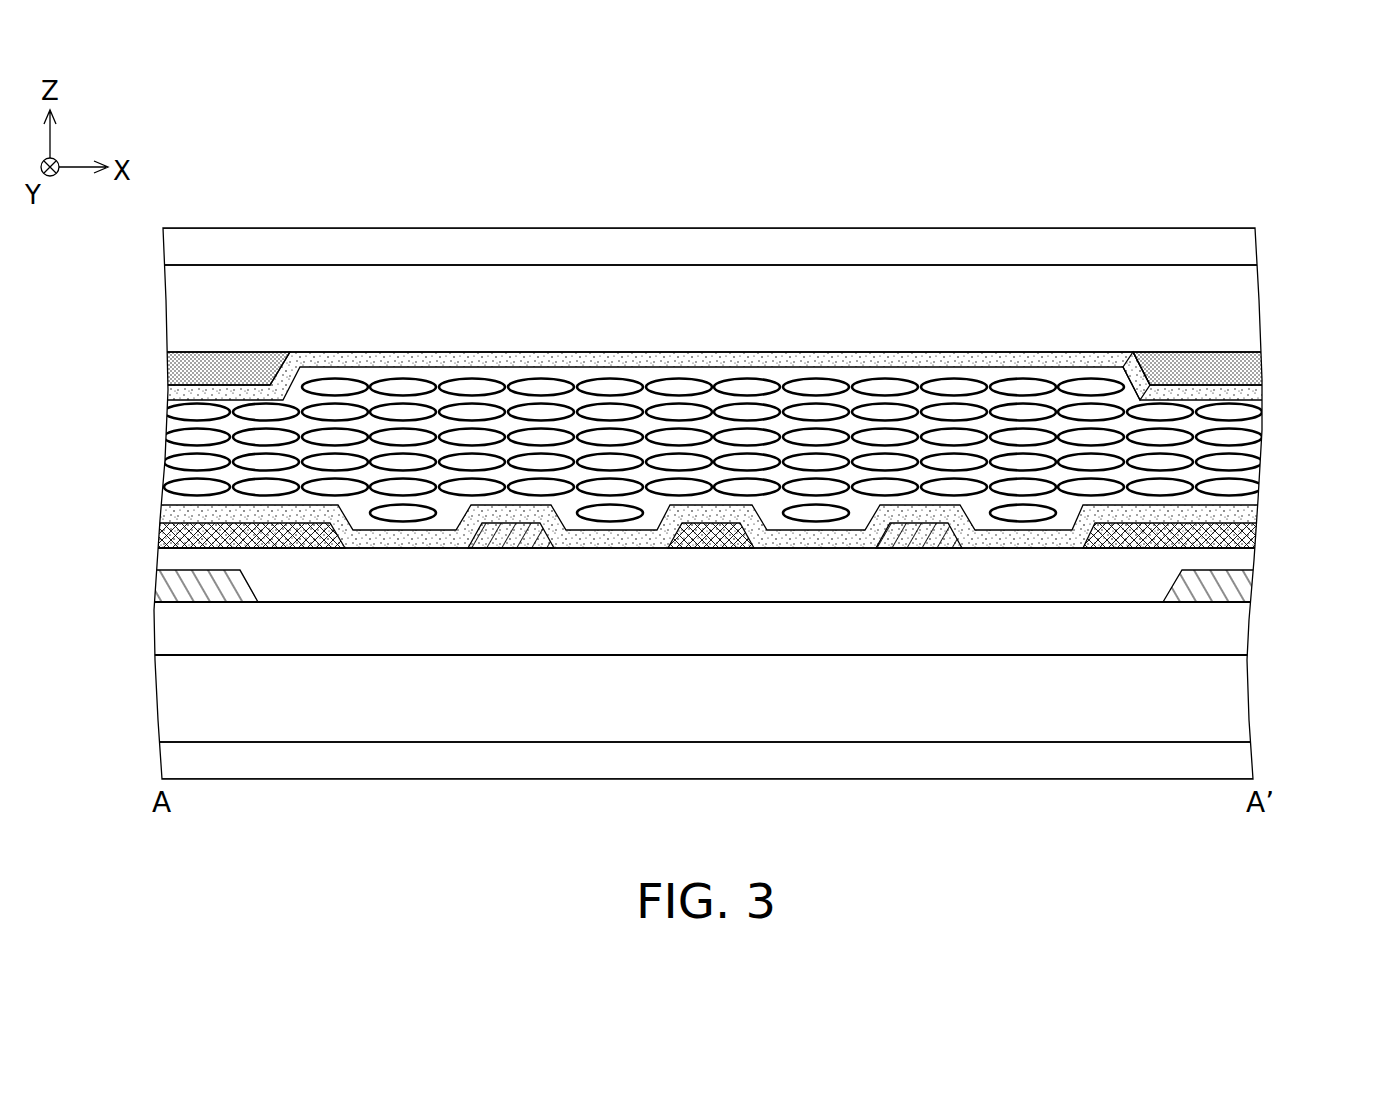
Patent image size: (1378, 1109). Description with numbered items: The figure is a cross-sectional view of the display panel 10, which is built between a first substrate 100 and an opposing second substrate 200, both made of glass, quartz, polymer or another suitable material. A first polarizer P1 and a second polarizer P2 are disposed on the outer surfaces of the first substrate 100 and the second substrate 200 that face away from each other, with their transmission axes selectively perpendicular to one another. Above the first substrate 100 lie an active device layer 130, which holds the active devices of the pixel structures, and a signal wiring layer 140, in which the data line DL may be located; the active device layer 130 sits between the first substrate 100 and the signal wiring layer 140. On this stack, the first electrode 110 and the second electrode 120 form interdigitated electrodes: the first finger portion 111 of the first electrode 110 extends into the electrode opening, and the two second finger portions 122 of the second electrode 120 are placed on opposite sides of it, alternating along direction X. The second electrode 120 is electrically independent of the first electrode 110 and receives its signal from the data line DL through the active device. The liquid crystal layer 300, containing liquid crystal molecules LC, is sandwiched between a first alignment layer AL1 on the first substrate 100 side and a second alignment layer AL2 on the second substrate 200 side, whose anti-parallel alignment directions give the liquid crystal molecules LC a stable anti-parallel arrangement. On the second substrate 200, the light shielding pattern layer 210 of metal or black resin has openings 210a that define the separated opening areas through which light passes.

The display panel 10 is at (1376, 832).
The first substrate 100 is at (1247, 698).
The first electrode 110 is at (741, 679).
The first finger portion 111 is at (715, 540).
The second electrode 120 is at (737, 679).
The second finger portion 122 is at (503, 540).
The active device layer 130 is at (1246, 630).
The signal wiring layer 140 is at (1257, 550).
The second substrate 200 is at (1261, 305).
The light shielding pattern layer 210 is at (1262, 363).
The opening 210a is at (1124, 372).
The liquid crystal layer 300 is at (748, 450).
The liquid crystal molecules LC is at (1252, 440).
The first alignment layer AL1 is at (1252, 515).
The second alignment layer AL2 is at (1256, 396).
The first polarizer P1 is at (1250, 762).
The second polarizer P2 is at (1257, 249).
The data line DL is at (159, 588).